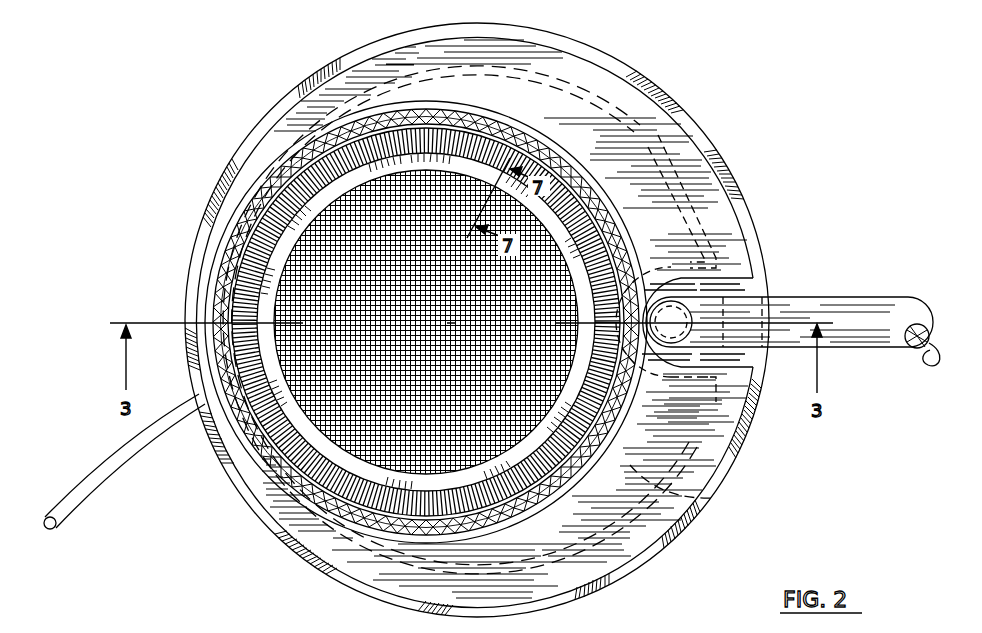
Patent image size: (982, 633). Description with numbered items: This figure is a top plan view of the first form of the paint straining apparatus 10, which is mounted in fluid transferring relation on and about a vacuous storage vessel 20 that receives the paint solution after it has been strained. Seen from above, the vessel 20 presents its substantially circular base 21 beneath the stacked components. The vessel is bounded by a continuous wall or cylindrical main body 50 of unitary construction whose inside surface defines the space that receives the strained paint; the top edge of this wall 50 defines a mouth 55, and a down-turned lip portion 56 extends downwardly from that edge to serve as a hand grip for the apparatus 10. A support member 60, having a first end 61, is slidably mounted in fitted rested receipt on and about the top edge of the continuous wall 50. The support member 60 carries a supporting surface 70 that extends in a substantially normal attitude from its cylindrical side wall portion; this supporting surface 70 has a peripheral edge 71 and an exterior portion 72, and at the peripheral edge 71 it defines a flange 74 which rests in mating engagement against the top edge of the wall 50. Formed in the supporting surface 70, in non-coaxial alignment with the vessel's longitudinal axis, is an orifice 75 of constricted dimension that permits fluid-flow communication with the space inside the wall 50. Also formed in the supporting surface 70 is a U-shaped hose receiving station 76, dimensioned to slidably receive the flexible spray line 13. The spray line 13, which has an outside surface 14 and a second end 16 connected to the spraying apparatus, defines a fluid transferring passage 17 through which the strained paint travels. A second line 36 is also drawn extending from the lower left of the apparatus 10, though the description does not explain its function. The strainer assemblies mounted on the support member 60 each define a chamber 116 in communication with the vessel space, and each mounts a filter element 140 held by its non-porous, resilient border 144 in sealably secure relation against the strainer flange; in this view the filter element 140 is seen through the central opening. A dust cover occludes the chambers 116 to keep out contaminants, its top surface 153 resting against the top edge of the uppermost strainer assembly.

The apparatus 10 is at (766, 157).
The flexible spray line 13 is at (830, 303).
The outside surface 14 is at (800, 297).
The second end 16 is at (872, 303).
The fluid transferring passage 17 is at (938, 357).
The vacuous storage vessel 20 is at (648, 138).
The circular base 21 is at (696, 497).
The outlet tube 36 is at (90, 508).
The continuous wall 50 is at (596, 82).
The mouth 55 is at (703, 230).
The down-turned lip portion 56 is at (352, 582).
The support member 60 is at (278, 115).
The first end 61 is at (683, 160).
The supporting surface 70 is at (695, 462).
The peripheral edge 71 is at (687, 512).
The exterior portion 72 is at (566, 75).
The flange 74 is at (240, 160).
The orifice 75 is at (600, 201).
The U-shaped hose receiving station 76 is at (745, 285).
The chamber 116 is at (328, 492).
The filter element 140 is at (442, 335).
The border 144 is at (567, 262).
The top surface 153 is at (333, 620).